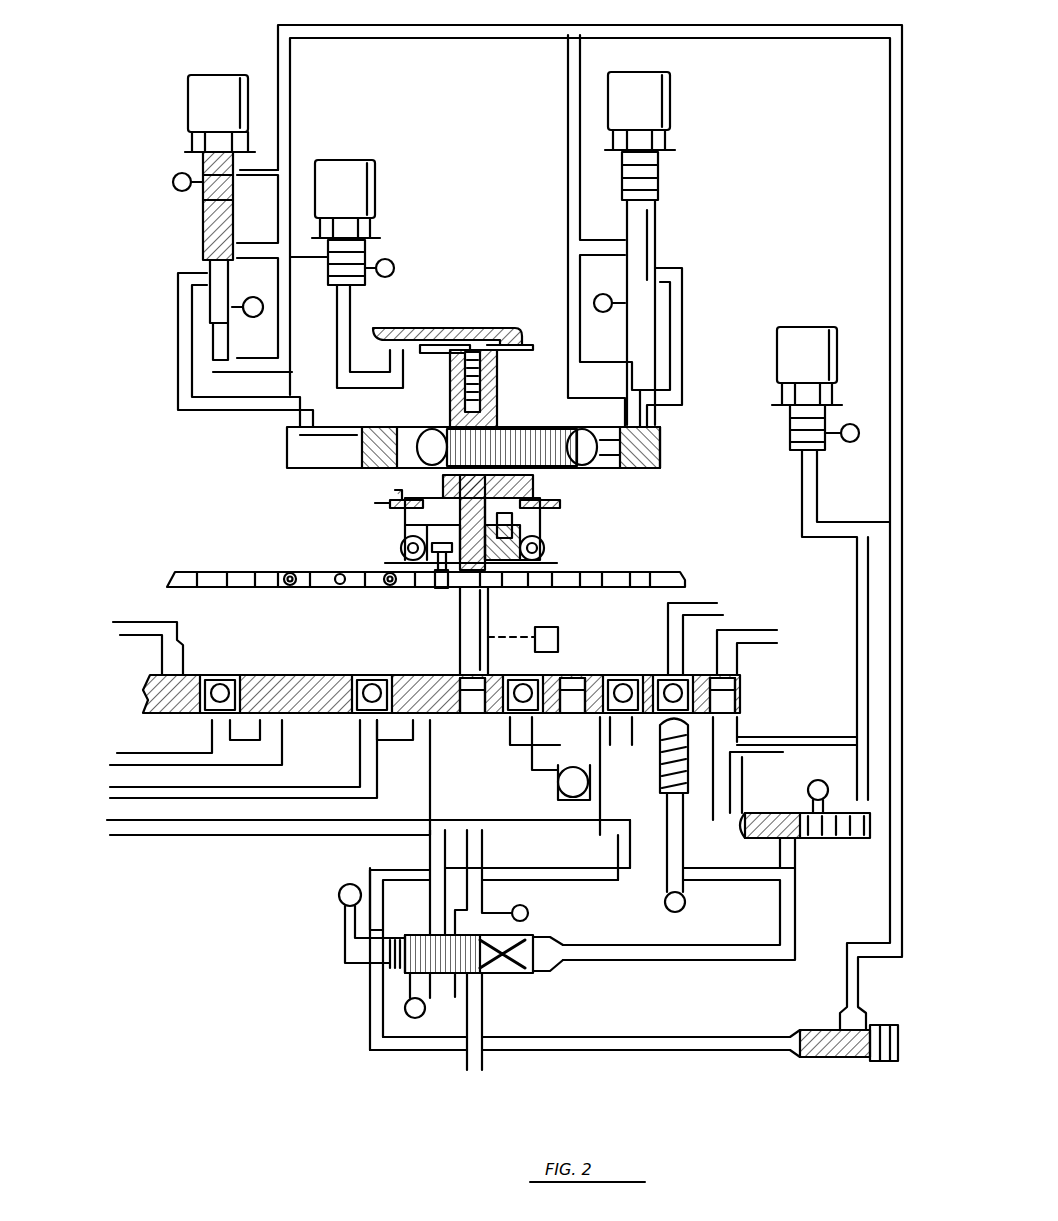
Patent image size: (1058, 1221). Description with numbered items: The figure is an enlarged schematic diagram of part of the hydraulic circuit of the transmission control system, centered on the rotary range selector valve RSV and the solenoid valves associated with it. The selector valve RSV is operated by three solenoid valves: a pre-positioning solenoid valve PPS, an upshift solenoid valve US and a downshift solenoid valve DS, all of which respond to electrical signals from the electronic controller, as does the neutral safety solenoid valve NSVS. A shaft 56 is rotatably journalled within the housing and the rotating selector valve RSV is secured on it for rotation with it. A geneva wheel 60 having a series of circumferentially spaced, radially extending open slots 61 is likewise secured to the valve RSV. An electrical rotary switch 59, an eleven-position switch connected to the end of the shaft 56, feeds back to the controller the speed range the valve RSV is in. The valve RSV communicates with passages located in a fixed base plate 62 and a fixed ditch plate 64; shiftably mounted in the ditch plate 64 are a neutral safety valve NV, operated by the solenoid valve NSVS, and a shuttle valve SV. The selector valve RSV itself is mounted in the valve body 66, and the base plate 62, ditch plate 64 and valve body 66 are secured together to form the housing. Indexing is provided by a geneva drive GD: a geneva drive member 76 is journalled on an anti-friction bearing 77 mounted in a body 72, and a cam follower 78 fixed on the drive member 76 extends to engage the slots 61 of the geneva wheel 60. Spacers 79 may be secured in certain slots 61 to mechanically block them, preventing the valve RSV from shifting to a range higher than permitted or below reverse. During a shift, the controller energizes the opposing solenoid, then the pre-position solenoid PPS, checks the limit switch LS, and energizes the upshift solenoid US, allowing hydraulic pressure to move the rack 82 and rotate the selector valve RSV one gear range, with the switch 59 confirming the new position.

The downshift solenoid valve DS is at (185, 84).
The pre-positioning solenoid valve PPS is at (372, 170).
The upshift solenoid valve US is at (672, 110).
The neutral safety solenoid valve NSVS is at (825, 325).
The limit switch LS is at (447, 348).
The rack 82 is at (560, 468).
The geneva drive GD is at (352, 522).
The shaft 56 is at (490, 610).
The anti-friction bearing 77 is at (402, 545).
The cam follower 78 is at (440, 590).
The body 72 is at (585, 556).
The geneva drive member 76 is at (520, 532).
The geneva wheel 60 is at (245, 570).
The spacers 79 is at (290, 587).
The open slots 61 is at (640, 582).
The electrical rotary switch 59 is at (558, 637).
The valve body 66 is at (306, 659).
The rotary range selector valve RSV is at (143, 690).
The base plate 62 is at (328, 745).
The shuttle valve SV is at (780, 812).
The ditch plate 64 is at (578, 860).
The neutral safety valve NV is at (512, 975).